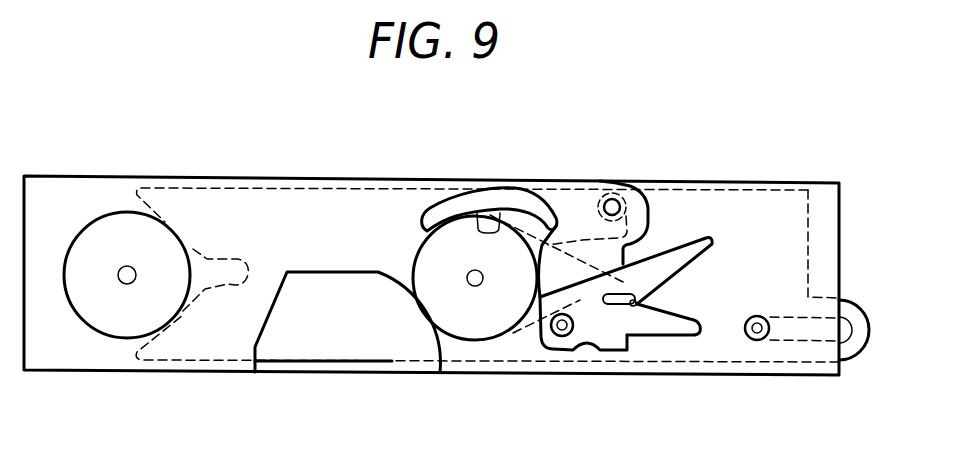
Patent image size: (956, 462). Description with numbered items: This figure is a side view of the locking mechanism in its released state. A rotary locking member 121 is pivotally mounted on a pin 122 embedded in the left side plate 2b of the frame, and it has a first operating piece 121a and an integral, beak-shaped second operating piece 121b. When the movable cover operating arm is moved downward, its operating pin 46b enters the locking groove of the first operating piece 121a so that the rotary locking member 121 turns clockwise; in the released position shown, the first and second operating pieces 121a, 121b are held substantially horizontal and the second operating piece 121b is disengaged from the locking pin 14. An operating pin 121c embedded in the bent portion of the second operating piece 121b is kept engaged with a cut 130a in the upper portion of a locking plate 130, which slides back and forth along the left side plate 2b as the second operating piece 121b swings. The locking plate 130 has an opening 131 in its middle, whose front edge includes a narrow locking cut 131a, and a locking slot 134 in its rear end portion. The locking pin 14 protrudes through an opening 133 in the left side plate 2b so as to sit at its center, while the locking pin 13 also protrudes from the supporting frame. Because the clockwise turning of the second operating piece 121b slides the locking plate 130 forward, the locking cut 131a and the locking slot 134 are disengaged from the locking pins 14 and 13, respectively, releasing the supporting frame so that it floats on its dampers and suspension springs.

The left side plate 2b is at (833, 238).
The locking plate 130 is at (778, 190).
The cut 130a is at (603, 192).
The locking pin 13 is at (127, 284).
The locking slot 134 is at (224, 284).
The opening 131 is at (446, 319).
The locking cut 131a is at (571, 300).
The locking pin 14 is at (477, 288).
The opening 133 is at (503, 222).
The rotary locking member 121 is at (617, 343).
The first operating piece 121a is at (693, 255).
The second operating piece 121b is at (563, 203).
The operating pin 121c is at (618, 196).
The operating pin 46b is at (707, 320).
The pin 122 is at (562, 336).